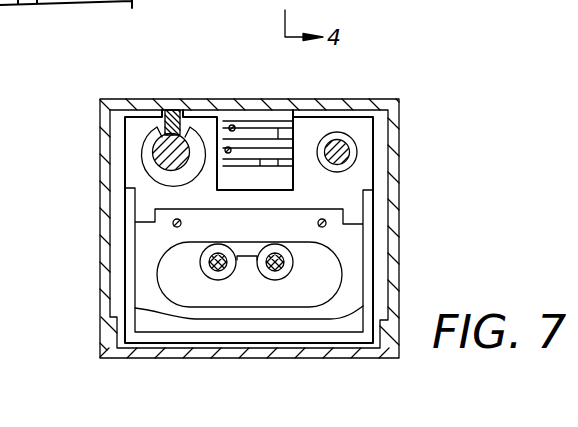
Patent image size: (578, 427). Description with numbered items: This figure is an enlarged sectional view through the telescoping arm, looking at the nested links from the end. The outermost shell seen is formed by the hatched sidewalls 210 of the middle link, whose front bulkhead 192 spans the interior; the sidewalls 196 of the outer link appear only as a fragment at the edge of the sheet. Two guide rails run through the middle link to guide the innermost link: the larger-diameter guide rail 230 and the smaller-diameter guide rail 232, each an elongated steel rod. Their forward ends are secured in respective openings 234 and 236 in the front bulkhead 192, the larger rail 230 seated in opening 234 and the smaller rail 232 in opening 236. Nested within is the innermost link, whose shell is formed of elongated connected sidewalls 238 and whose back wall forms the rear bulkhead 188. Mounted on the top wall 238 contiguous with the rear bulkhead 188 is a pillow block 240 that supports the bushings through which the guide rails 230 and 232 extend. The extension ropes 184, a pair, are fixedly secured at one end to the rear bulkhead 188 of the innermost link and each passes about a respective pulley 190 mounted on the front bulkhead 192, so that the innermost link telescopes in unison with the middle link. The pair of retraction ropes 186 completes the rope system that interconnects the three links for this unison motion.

The sidewalls 196 is at (132, 10).
The sidewalls 210 is at (183, 100).
The pillow block 240 is at (137, 129).
The guide rail 230 is at (152, 153).
The opening 234 is at (152, 167).
The extension ropes 184 is at (228, 150).
The pulley 190 is at (263, 134).
The front bulkhead 192 is at (305, 127).
The guide rail 232 is at (347, 147).
The opening 236 is at (352, 157).
The retraction ropes 186 is at (317, 223).
The rear bulkhead 188 is at (355, 268).
The sidewalls 238 is at (209, 339).